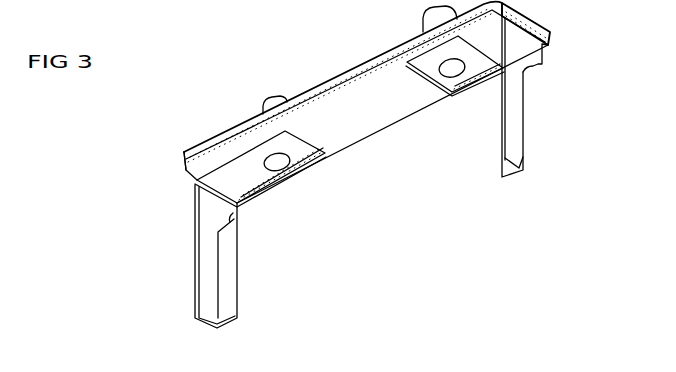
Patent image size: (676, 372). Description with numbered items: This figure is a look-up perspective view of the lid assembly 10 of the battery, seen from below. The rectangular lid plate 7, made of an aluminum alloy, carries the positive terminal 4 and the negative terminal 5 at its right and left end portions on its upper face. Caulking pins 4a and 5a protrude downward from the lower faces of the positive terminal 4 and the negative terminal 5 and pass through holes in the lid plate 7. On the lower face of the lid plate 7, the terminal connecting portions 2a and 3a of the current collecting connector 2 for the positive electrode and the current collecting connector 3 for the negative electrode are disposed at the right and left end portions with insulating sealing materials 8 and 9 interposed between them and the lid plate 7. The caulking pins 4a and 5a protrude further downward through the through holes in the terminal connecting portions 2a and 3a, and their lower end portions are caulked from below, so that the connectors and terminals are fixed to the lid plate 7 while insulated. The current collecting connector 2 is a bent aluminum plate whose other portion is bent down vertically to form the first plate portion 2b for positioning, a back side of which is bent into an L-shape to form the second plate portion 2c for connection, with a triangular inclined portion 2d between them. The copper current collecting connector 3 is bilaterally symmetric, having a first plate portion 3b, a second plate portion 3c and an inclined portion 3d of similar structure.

The lid assembly 10 is at (363, 137).
The lid plate 7 is at (358, 92).
The insulating sealing material 8 is at (434, 44).
The insulating sealing material 9 is at (213, 143).
The positive terminal 4 is at (434, 13).
The negative terminal 5 is at (263, 106).
The caulking pin 4a is at (446, 78).
The caulking pin 5a is at (270, 168).
The current collecting connector for the positive electrode 2 is at (495, 96).
The terminal connecting portion 2a is at (443, 76).
The first plate portion 2b is at (502, 130).
The second plate portion 2c is at (502, 167).
The inclined portion 2d is at (554, 59).
The current collecting connector for the negative electrode 3 is at (238, 229).
The terminal connecting portion 3a is at (277, 169).
The first plate portion 3b is at (207, 283).
The second plate portion 3c is at (226, 280).
The inclined portion 3d is at (252, 221).